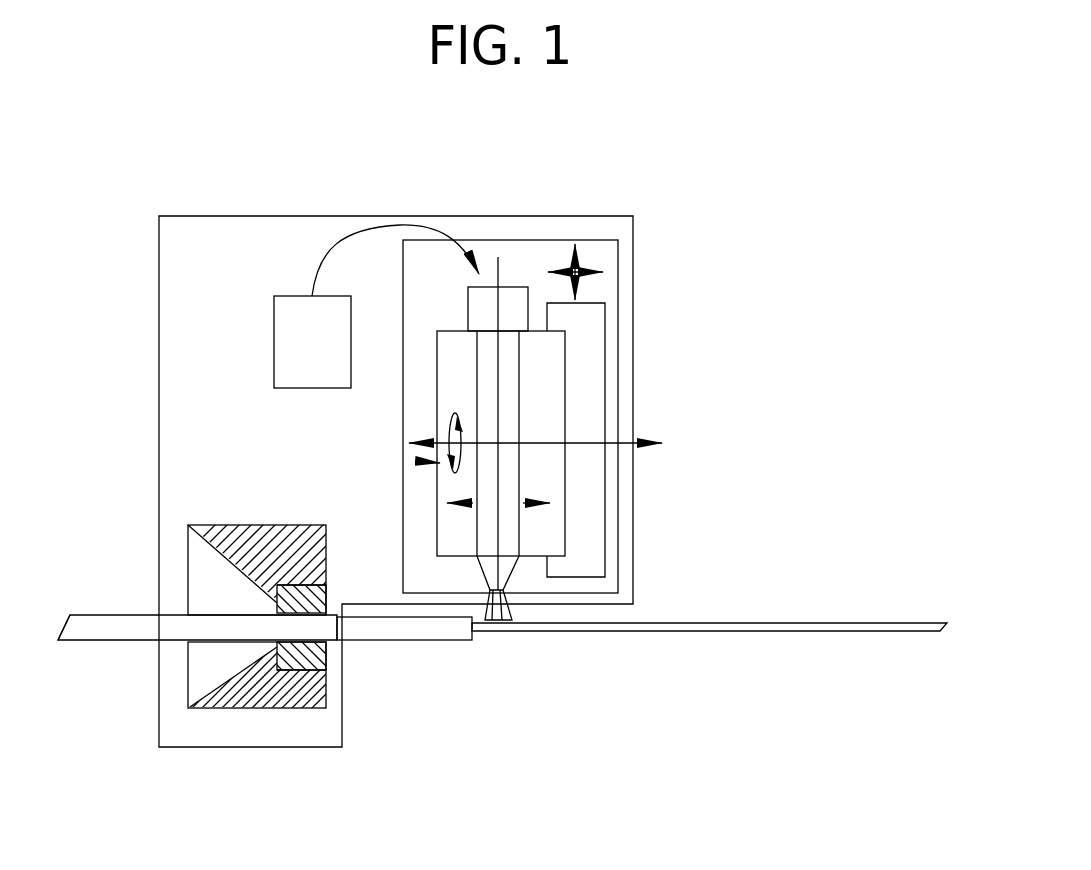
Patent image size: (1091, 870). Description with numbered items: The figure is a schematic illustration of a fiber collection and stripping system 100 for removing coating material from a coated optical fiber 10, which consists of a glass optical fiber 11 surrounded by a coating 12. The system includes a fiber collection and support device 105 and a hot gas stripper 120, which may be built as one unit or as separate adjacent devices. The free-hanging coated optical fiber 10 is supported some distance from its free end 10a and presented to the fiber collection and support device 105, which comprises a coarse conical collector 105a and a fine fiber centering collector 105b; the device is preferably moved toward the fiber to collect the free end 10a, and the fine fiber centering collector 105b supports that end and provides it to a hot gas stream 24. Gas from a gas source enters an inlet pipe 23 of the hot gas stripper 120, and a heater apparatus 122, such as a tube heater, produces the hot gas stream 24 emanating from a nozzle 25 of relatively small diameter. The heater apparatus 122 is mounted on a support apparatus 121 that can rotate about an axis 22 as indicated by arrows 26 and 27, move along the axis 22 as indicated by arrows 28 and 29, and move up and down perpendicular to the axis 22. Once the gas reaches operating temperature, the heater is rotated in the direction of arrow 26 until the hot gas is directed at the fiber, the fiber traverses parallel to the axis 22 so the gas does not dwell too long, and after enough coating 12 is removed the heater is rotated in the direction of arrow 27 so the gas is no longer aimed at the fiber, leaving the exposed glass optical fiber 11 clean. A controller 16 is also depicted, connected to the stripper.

The fiber collection and stripping system 100 is at (396, 197).
The hot gas stripper 120 is at (619, 382).
The controller 16 is at (274, 333).
The inlet pipe 23 is at (512, 287).
The support apparatus 121 is at (605, 475).
The heater apparatus 122 is at (568, 482).
The nozzle 25 is at (510, 573).
The axis 22 is at (638, 440).
The arrow 27 is at (447, 428).
The arrow 26 is at (416, 461).
The arrow 28 is at (473, 503).
The arrow 29 is at (523, 503).
The glass optical fiber 11 is at (628, 631).
The coating 12 is at (472, 637).
The hot gas stream 24 is at (511, 622).
The coated optical fiber 10 is at (122, 615).
The free end 10a is at (145, 643).
The fiber collection and support device 105 is at (330, 585).
The coarse conical collector 105a is at (242, 697).
The fine fiber centering collector 105b is at (317, 653).